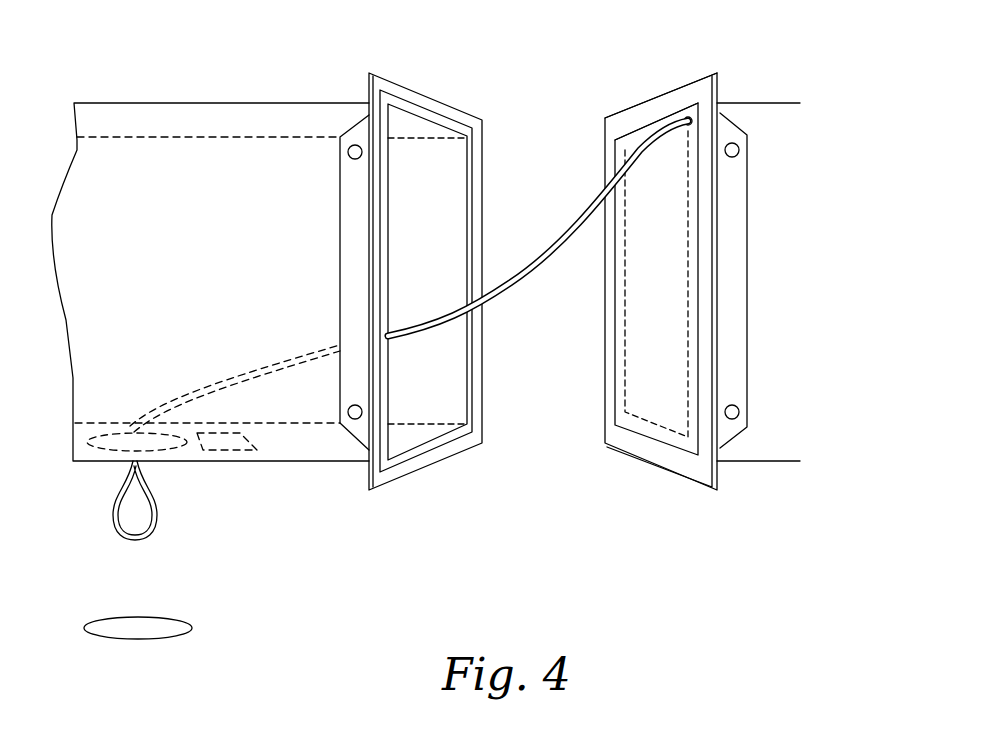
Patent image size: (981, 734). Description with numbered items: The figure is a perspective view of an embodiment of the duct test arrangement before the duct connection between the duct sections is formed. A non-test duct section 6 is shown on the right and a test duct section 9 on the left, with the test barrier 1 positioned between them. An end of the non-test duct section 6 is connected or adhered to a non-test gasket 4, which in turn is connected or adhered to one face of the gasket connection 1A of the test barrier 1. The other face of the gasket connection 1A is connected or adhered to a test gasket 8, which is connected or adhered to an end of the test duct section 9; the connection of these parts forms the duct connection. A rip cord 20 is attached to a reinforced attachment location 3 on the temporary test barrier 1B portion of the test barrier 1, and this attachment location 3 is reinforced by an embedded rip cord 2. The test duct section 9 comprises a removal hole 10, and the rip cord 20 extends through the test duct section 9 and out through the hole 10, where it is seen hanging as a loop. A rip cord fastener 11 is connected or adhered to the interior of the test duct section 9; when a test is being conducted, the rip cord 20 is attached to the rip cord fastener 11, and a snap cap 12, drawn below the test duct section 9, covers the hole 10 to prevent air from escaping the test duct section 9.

The test barrier 1 is at (583, 358).
The gasket connection 1A is at (645, 118).
The temporary test barrier 1B is at (642, 185).
The embedded rip cord 2 is at (637, 415).
The reinforced attachment location 3 is at (689, 116).
The non-test gasket 4 is at (720, 467).
The non-test duct section 6 is at (773, 103).
The test gasket 8 is at (418, 447).
The test duct section 9 is at (148, 102).
The removal hole 10 is at (98, 455).
The rip cord fastener 11 is at (237, 460).
The snap cap 12 is at (142, 637).
The rip cord 20 is at (503, 288).